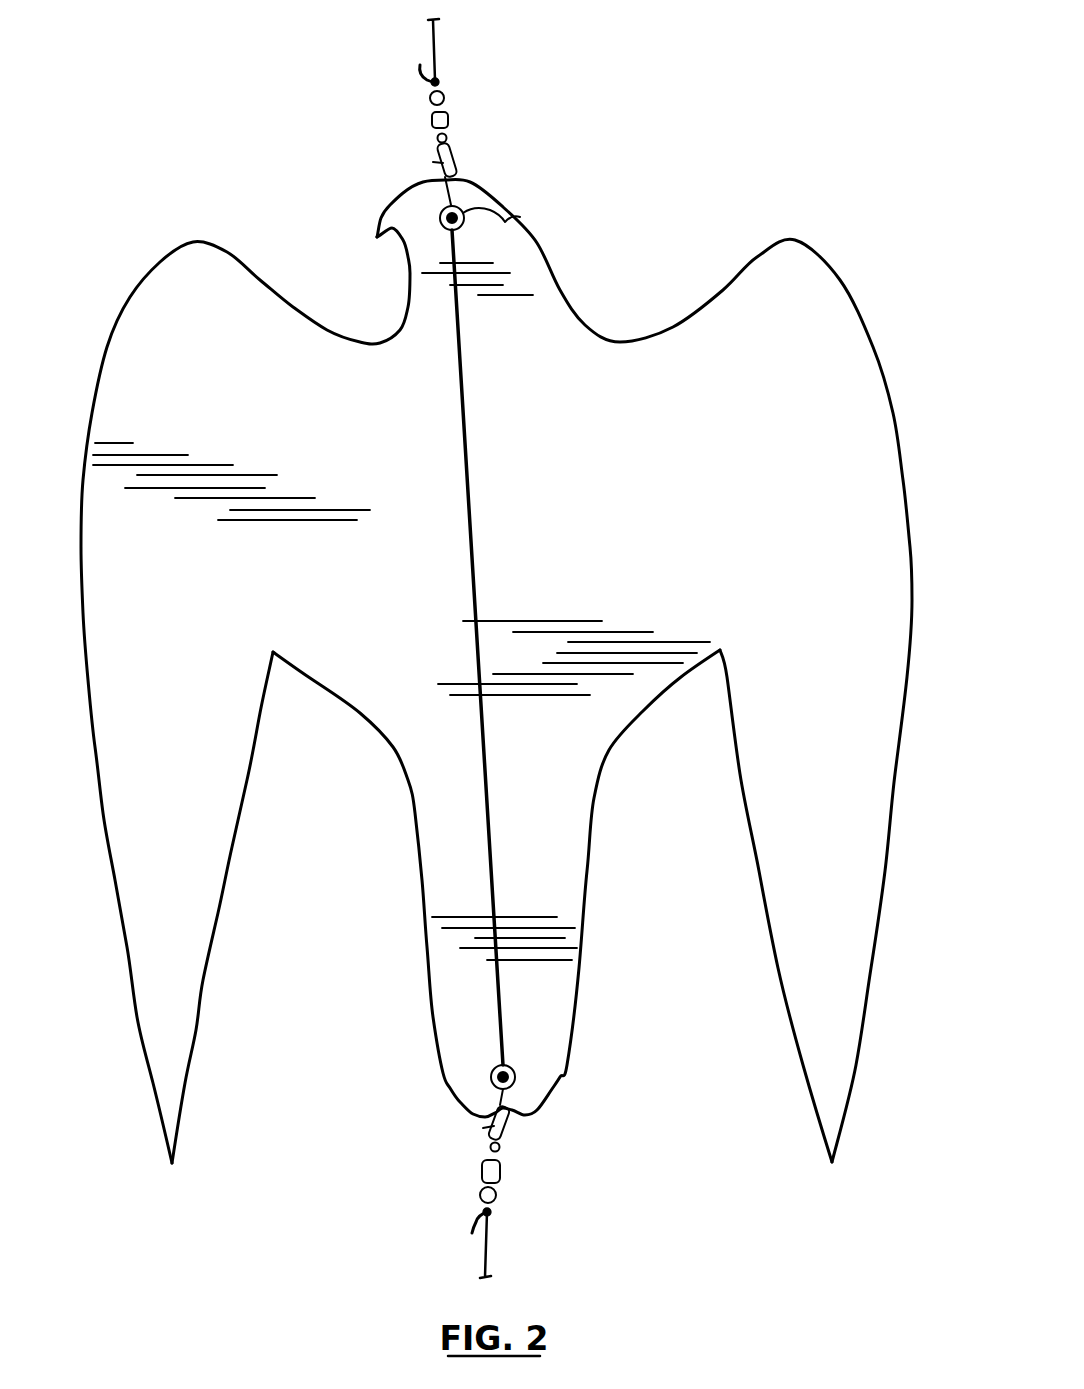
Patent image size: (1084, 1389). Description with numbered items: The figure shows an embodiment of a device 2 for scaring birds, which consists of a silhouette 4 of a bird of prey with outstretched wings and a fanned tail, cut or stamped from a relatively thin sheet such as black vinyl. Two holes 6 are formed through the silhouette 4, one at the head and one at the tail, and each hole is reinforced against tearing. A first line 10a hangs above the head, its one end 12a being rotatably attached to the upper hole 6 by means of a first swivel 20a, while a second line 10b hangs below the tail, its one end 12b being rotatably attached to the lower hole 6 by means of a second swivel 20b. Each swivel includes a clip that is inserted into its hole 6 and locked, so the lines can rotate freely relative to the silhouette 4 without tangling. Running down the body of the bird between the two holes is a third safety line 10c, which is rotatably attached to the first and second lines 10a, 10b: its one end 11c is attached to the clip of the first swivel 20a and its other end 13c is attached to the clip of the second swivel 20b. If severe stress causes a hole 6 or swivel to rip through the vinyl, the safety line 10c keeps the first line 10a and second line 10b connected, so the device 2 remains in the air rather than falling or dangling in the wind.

The device 2 is at (607, 174).
The silhouette 4 is at (553, 275).
The hole 6 is at (462, 210).
The first line 10a is at (430, 20).
The second line 10b is at (493, 1253).
The third safety line 10c is at (477, 568).
The one end of the safety line 11c is at (517, 218).
The one end of the first line 12a is at (445, 63).
The one end of the second line 12b is at (478, 1237).
The another end of the safety line 13c is at (505, 1062).
The first swivel 20a is at (456, 142).
The second swivel 20b is at (510, 1130).